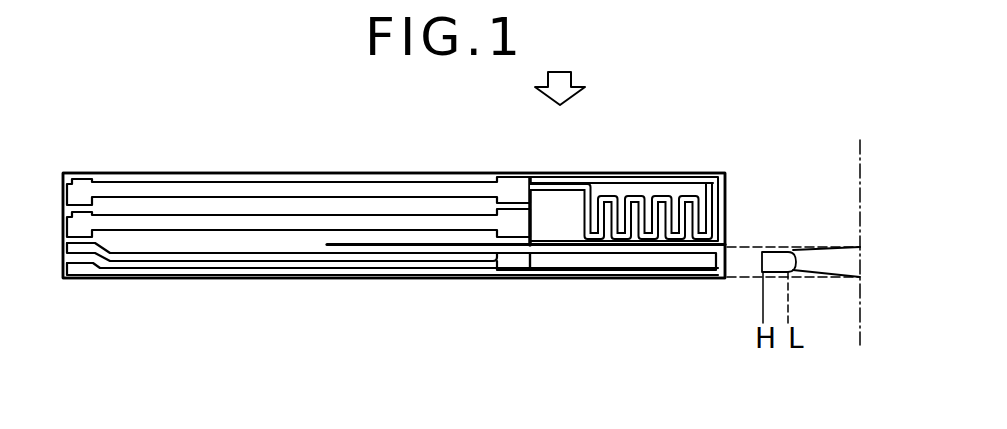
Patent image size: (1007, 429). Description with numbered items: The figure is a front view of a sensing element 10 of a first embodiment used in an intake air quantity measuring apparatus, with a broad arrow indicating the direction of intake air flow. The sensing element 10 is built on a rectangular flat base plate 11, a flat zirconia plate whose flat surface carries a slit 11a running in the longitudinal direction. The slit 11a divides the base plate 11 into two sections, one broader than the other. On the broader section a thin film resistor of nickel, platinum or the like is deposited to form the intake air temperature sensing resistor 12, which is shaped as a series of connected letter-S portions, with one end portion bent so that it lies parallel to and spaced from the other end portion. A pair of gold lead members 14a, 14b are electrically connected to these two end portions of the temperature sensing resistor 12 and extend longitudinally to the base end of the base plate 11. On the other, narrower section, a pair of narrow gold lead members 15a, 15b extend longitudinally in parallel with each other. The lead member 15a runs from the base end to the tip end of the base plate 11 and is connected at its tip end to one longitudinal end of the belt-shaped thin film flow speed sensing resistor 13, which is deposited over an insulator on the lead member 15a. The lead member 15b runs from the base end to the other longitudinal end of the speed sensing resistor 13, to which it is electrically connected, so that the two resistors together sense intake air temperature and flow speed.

The sensing element 10 is at (465, 173).
The base plate 11 is at (387, 174).
The slit 11a is at (727, 243).
The intake air temperature sensing resistor 12 is at (720, 192).
The flow speed sensing resistor 13 is at (595, 262).
The lead member 14a is at (237, 227).
The lead member 14b is at (303, 188).
The lead member 15a is at (232, 274).
The lead member 15b is at (304, 261).